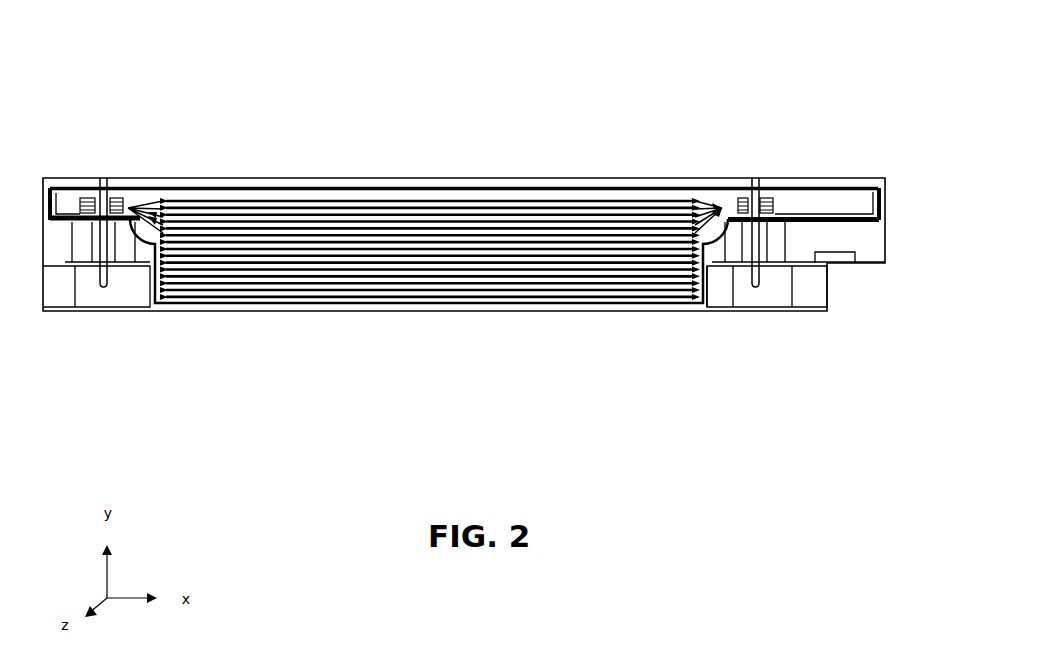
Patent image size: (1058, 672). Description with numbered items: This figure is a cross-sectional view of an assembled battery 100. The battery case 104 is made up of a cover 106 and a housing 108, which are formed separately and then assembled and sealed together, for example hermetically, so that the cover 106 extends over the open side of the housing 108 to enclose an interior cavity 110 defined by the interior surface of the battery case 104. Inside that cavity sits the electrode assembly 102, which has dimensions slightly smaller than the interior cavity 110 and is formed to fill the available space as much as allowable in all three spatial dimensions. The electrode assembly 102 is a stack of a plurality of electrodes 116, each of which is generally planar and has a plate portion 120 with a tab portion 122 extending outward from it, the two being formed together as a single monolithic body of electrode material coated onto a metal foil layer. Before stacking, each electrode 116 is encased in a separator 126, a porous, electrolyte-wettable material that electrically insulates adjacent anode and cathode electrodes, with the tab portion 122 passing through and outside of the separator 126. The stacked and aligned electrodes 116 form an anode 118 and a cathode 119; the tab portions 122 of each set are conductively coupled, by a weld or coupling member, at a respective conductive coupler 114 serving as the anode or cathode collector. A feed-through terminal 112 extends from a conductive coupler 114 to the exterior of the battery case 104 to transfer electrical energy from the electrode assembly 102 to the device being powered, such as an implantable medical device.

The battery 100 is at (157, 59).
The electrode assembly 102 is at (472, 195).
The battery case 104 is at (886, 248).
The cover 106 is at (860, 181).
The housing 108 is at (826, 280).
The interior cavity 110 is at (805, 186).
The feed-through terminal 112 is at (103, 287).
The conductive coupler 114 is at (85, 184).
The electrode 116 is at (330, 297).
The anode 118 is at (757, 186).
The cathode 119 is at (106, 186).
The plate portion 120 is at (427, 293).
The tab portion 122 is at (147, 192).
The separator 126 is at (705, 312).